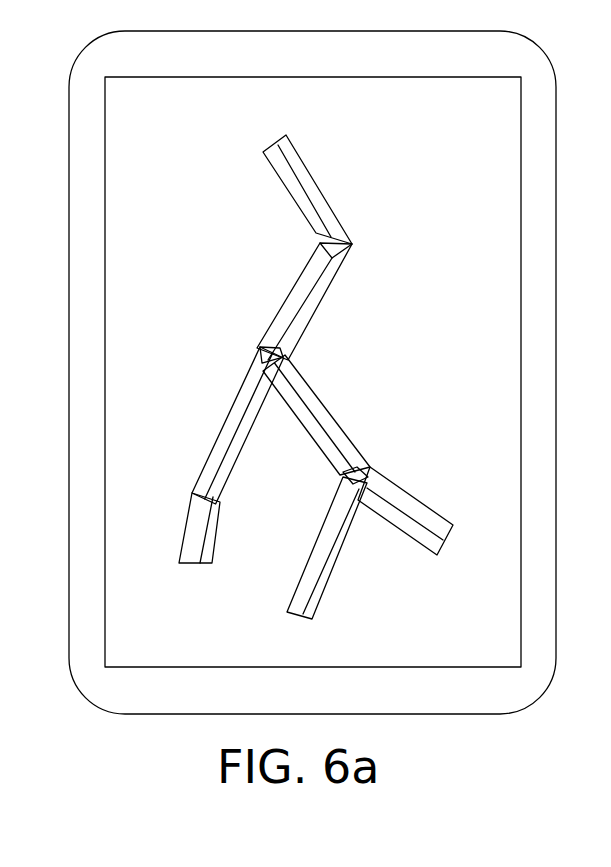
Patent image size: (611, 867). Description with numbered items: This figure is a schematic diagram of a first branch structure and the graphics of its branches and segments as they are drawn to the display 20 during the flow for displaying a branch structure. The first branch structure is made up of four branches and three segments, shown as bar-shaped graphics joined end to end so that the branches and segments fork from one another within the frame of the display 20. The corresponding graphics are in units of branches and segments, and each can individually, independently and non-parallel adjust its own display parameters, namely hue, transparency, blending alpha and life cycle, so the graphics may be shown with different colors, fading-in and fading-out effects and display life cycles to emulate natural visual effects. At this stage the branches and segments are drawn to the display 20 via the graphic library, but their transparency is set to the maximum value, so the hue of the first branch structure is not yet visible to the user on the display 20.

The display 20 is at (522, 176).